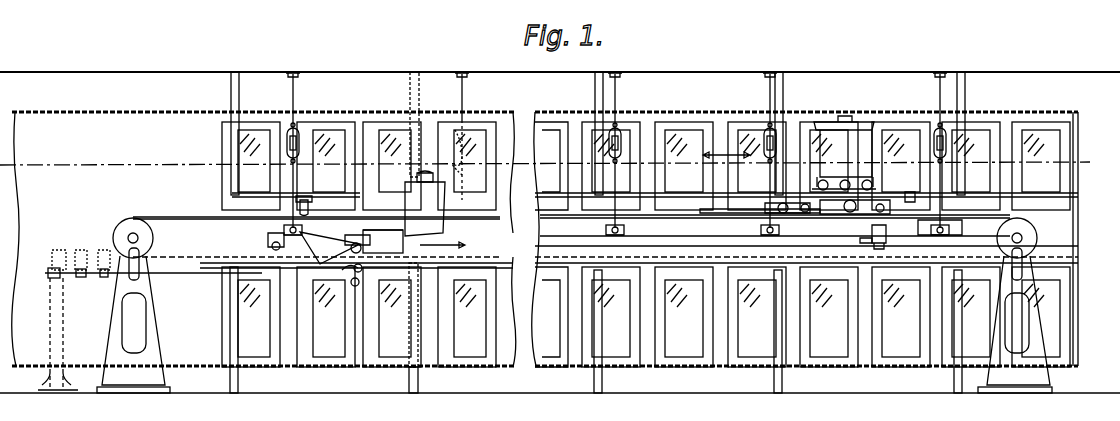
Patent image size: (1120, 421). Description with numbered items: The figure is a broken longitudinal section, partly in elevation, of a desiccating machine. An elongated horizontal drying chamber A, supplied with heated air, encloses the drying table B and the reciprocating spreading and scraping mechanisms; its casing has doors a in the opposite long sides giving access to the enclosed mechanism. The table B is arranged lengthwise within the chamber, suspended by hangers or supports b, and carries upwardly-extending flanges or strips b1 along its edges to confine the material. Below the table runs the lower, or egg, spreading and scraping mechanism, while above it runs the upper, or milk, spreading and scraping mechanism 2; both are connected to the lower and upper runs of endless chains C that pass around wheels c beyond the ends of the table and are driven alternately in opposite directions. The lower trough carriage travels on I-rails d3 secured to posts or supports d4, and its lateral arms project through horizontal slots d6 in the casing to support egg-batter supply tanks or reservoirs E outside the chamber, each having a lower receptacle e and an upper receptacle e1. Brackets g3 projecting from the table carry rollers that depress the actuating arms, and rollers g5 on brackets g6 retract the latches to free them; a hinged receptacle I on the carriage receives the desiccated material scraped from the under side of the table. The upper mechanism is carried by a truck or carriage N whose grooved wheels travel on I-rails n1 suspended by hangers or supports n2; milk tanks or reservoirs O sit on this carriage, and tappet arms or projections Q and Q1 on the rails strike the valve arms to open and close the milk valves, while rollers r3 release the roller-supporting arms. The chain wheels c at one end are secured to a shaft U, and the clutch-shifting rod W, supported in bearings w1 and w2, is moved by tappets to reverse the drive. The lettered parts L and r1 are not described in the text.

The drying chamber A is at (167, 109).
The upper spreading and scraping mechanism 2 is at (1094, 164).
The doors a is at (646, 244).
The hangers or supports b is at (293, 92).
The flanges or strips b1 is at (960, 233).
The I-rails n1 is at (696, 192).
The hangers or supports n2 is at (966, 93).
The wheels c is at (323, 242).
The endless chains C is at (212, 219).
The drying table B is at (737, 232).
The shaft U is at (122, 235).
The rod W is at (205, 275).
The bearing w1 is at (58, 282).
The bearing w2 is at (1010, 272).
The brackets g3 is at (272, 248).
The rollers g5 is at (866, 242).
The brackets g6 is at (885, 250).
The I-rails d3 is at (264, 282).
The posts or supports d4 is at (230, 328).
The horizontal slots d6 is at (692, 254).
The receptacle I is at (333, 268).
The hook r1 is at (310, 195).
The rollers r3 is at (912, 200).
The tappet arms or projections Q is at (317, 188).
The tappet arms or projections Q1 is at (875, 183).
The supply tanks or reservoirs E is at (425, 209).
The upper receptacle or compartment e1 is at (420, 188).
The box L is at (414, 241).
The lower receptacle or compartment e is at (383, 241).
The milk tanks or reservoirs O is at (845, 173).
The truck or carriage N is at (833, 222).